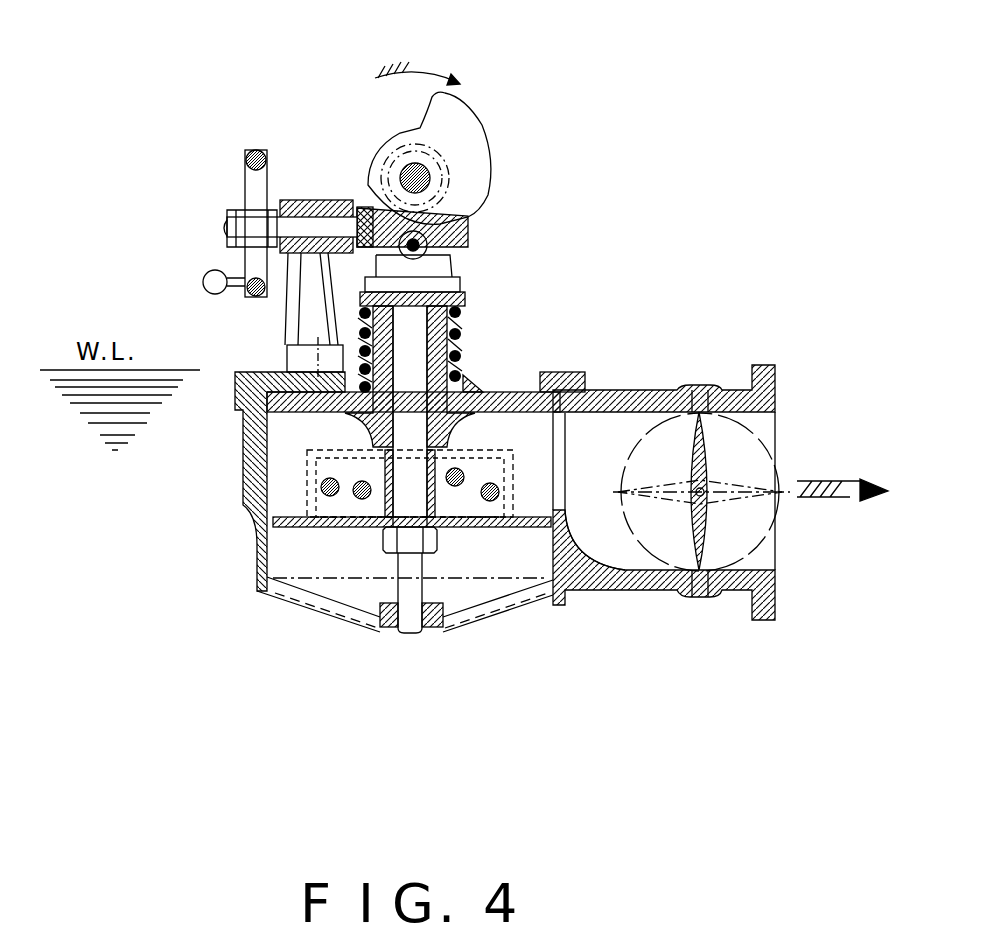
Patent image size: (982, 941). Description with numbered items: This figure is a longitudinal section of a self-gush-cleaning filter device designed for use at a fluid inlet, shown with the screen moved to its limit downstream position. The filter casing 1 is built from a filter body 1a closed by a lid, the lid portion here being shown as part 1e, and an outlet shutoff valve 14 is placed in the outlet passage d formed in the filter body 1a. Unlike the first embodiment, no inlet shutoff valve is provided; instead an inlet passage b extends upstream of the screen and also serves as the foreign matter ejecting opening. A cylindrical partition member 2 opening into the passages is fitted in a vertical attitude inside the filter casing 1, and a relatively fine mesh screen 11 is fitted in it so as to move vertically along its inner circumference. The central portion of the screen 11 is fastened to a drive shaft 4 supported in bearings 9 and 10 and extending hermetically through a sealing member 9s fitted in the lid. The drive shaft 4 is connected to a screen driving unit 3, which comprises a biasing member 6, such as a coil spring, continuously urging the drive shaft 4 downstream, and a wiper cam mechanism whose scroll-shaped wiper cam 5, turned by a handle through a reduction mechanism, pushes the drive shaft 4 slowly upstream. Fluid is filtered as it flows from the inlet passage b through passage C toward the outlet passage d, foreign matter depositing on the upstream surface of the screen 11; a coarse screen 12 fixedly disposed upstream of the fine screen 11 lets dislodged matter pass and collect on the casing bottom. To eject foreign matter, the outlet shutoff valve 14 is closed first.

The filter casing 1 is at (230, 543).
The filter body 1a is at (583, 590).
The valve body cover 1e is at (473, 387).
The cylindrical partition member 2 is at (240, 423).
The screen driving unit 3 is at (495, 210).
The drive shaft 4 is at (410, 355).
The wiper cam 5 is at (470, 155).
The biasing member 6 is at (467, 347).
The bearing 9 is at (470, 360).
The sealing member 9s is at (470, 378).
The bearing 10 is at (380, 633).
The screen 11 is at (507, 505).
The coarse screen 12 is at (480, 618).
The outlet shutoff valve 14 is at (710, 555).
The inlet passage b is at (307, 627).
The passage C is at (613, 547).
The outlet passage d is at (752, 520).